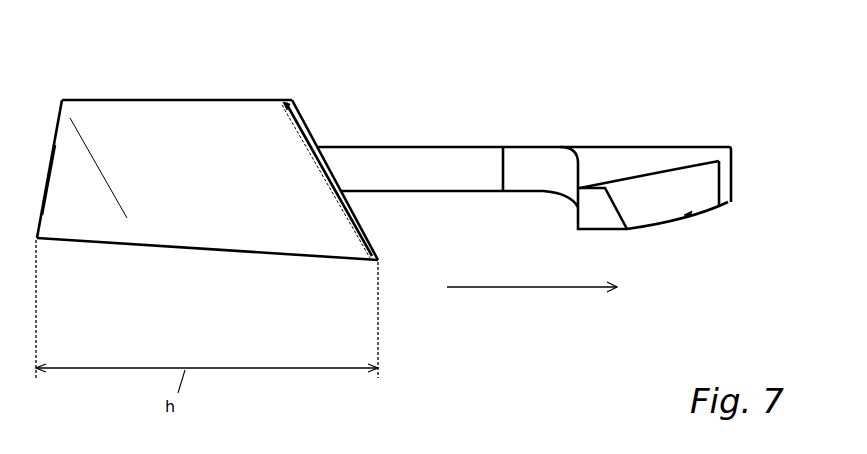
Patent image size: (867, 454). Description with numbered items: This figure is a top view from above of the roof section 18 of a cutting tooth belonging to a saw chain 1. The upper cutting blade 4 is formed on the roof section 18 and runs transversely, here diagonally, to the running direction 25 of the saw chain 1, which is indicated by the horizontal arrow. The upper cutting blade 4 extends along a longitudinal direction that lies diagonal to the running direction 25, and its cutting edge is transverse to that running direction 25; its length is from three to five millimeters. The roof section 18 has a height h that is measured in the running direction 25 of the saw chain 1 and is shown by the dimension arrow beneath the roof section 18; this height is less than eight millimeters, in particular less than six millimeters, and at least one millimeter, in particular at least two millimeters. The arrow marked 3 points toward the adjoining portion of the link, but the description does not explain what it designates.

The saw chain 1 is at (290, 133).
The arm element 3 is at (632, 68).
The upper cutting blade 4 is at (307, 117).
The roof section 18 is at (212, 205).
The running direction 25 is at (502, 288).